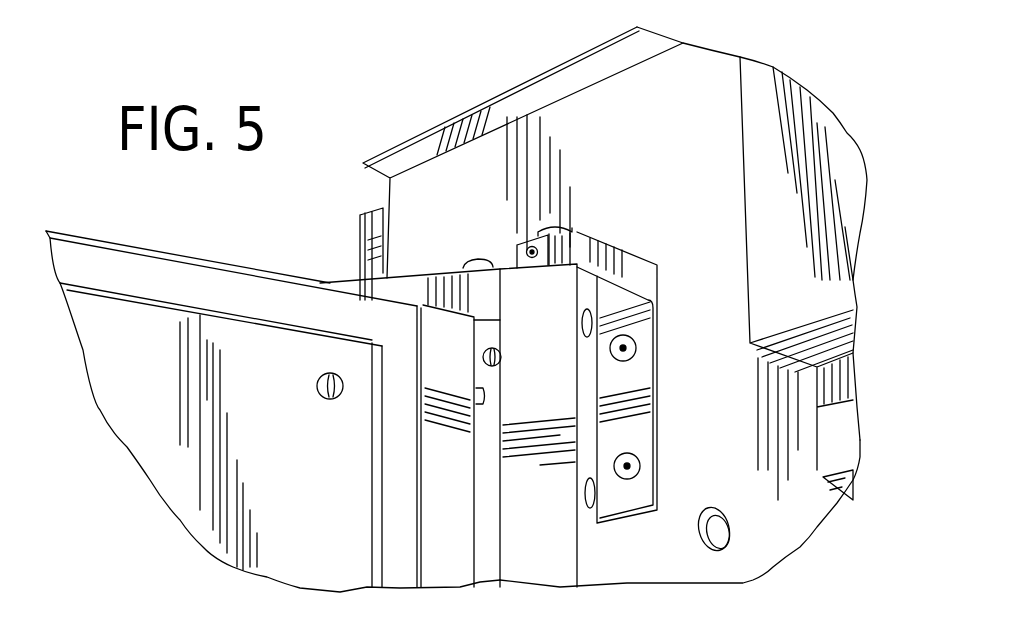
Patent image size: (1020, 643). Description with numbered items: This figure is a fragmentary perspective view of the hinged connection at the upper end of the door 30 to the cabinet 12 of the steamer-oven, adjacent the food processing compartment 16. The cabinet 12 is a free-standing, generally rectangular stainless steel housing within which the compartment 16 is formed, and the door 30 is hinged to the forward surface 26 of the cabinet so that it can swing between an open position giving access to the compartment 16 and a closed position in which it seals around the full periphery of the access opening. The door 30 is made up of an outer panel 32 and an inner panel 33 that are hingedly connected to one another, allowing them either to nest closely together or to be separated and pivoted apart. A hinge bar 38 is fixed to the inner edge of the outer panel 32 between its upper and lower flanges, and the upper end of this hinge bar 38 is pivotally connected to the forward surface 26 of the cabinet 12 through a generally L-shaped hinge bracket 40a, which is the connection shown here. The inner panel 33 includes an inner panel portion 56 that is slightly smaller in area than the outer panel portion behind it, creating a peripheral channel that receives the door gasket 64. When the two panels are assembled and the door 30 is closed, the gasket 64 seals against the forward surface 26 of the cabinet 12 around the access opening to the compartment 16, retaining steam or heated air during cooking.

The cabinet 12 is at (543, 73).
The food processing compartment 16 is at (843, 442).
The forward surface 26 is at (698, 85).
The door 30 is at (37, 221).
The outer panel 32 is at (334, 278).
The inner panel 33 is at (110, 242).
The hinge bar 38 is at (543, 553).
The hinge bracket 40a is at (622, 268).
The inner panel portion 56 is at (157, 440).
The door gasket 64 is at (403, 550).